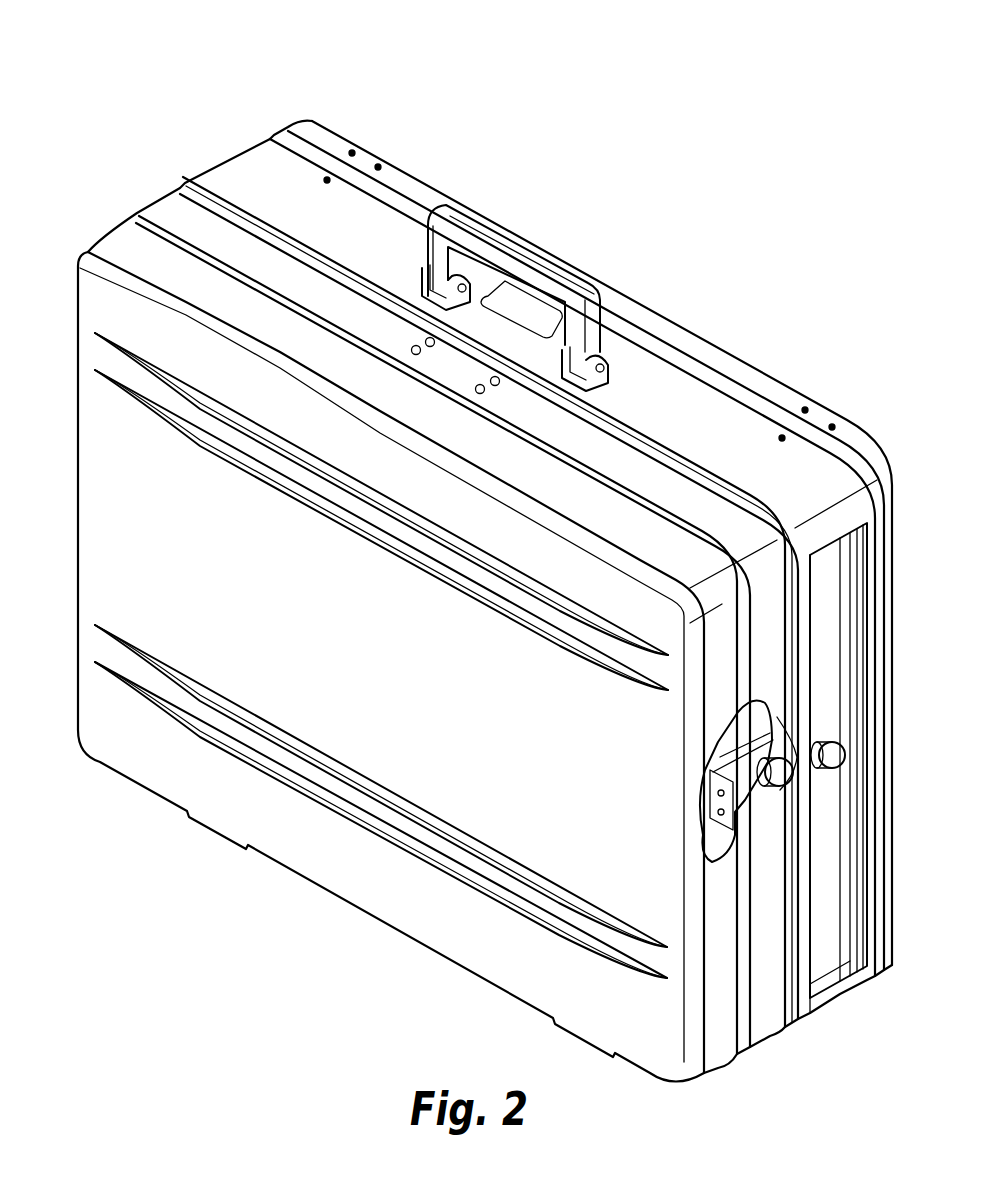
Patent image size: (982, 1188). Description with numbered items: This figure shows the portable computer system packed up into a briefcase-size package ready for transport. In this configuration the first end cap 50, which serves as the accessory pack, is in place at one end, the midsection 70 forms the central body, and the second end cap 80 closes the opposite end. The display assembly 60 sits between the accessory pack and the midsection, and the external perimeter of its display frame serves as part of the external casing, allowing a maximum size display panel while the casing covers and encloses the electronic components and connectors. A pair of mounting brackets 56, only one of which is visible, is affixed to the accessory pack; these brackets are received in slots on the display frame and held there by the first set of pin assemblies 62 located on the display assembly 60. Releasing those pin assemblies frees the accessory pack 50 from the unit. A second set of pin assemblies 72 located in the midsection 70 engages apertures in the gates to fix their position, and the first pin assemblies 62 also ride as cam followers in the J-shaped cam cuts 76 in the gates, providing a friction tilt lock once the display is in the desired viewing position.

The first end cap 50 is at (115, 775).
The mounting brackets 56 is at (703, 838).
The display assembly 60 is at (155, 205).
The first set of pin assemblies 62 is at (738, 757).
The midsection 70 is at (222, 166).
The second set of pin assemblies 72 is at (822, 781).
The cam cuts 76 is at (745, 723).
The second end cap 80 is at (303, 117).